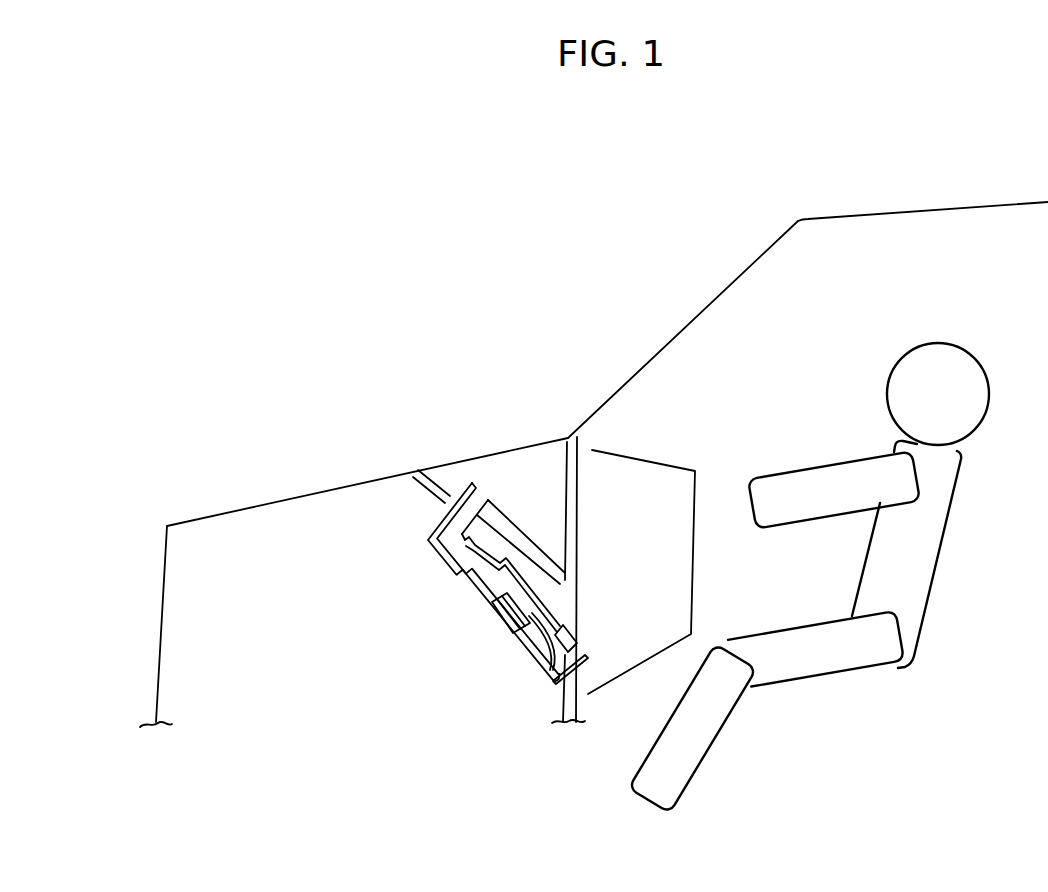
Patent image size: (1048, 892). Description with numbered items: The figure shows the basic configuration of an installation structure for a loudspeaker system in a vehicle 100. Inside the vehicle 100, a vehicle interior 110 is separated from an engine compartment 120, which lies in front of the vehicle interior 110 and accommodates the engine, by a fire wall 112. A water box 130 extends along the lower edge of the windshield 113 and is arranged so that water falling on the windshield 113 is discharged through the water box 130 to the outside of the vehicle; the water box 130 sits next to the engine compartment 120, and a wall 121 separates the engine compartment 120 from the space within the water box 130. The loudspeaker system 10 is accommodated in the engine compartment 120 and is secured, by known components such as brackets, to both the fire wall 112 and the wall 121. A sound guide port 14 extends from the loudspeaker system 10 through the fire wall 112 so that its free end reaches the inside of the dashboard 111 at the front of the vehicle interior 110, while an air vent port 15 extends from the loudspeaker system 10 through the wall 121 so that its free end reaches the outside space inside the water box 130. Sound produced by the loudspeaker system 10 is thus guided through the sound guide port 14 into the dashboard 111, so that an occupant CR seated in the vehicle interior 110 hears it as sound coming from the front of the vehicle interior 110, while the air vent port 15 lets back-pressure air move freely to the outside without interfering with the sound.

The loudspeaker system 10 is at (461, 606).
The sound guide port 14 is at (584, 662).
The air vent port 15 is at (431, 533).
The vehicle 100 is at (1008, 196).
The vehicle interior 110 is at (852, 232).
The dashboard 111 is at (677, 466).
The fire wall 112 is at (558, 700).
The windshield 113 is at (737, 281).
The engine compartment 120 is at (305, 523).
The wall 121 is at (422, 490).
The water box 130 is at (490, 480).
The occupant CR is at (930, 552).